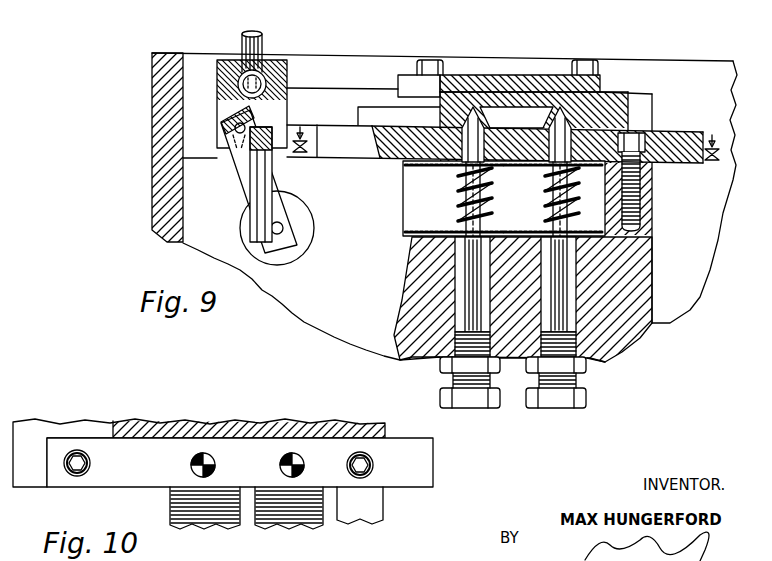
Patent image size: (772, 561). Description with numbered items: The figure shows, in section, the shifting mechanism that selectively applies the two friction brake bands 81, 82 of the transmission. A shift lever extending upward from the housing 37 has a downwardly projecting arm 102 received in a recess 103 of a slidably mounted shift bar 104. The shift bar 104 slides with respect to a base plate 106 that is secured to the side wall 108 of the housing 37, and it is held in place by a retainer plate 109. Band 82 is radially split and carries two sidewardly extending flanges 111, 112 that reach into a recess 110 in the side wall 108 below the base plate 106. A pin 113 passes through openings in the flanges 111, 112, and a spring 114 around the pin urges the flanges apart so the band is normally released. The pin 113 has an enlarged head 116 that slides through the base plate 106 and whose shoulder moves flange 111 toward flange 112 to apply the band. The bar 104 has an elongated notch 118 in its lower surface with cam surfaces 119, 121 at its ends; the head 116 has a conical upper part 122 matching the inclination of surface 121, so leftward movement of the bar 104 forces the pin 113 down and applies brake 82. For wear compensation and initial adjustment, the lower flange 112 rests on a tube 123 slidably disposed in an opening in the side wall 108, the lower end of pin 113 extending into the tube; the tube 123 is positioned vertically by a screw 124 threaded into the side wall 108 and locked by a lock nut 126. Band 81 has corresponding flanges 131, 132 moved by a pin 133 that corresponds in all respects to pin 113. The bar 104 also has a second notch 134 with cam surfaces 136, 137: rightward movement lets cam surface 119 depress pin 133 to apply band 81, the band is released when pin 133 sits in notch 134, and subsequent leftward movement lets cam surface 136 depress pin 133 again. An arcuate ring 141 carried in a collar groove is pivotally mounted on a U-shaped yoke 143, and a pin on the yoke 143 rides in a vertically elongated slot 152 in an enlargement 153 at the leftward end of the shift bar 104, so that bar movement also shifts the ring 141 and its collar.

In FIG. 9, the housing 37 is at (150, 134).
In FIG. 10, the brake band 81 is at (172, 516).
In FIG. 10, the brake band 82 is at (318, 528).
In FIG. 9, the arm 102 is at (262, 50).
In FIG. 9, the recess 103 is at (228, 70).
In FIG. 9, the shift bar 104 is at (326, 97).
In FIG. 9, the base plate 106 is at (681, 135).
In FIG. 10, the base plate 106 is at (146, 446).
In FIG. 9, the side wall 108 is at (673, 70).
In FIG. 10, the side wall 108 is at (273, 404).
In FIG. 9, the retainer plate 109 is at (483, 75).
In FIG. 9, the recess 110 is at (402, 197).
In FIG. 9, the flange 111 is at (577, 168).
In FIG. 9, the flange 112 is at (591, 233).
In FIG. 9, the pin 113 is at (547, 250).
In FIG. 9, the spring 114 is at (545, 192).
In FIG. 9, the enlarged head 116 is at (551, 146).
In FIG. 9, the elongated notch 118 is at (513, 110).
In FIG. 9, the cam surface 119 is at (470, 104).
In FIG. 9, the cam surface 121 is at (560, 104).
In FIG. 9, the conical upper part 122 is at (552, 119).
In FIG. 10, the conical upper part 122 is at (282, 462).
In FIG. 9, the tube 123 is at (573, 291).
In FIG. 9, the screw 124 is at (575, 409).
In FIG. 9, the lock nut 126 is at (578, 366).
In FIG. 9, the flange 131 is at (450, 167).
In FIG. 9, the flange 132 is at (448, 231).
In FIG. 9, the pin 133 is at (457, 202).
In FIG. 9, the second notch 134 is at (335, 153).
In FIG. 9, the cam surface 136 is at (447, 118).
In FIG. 9, the cam surface 137 is at (358, 116).
In FIG. 9, the arcuate ring 141 is at (281, 160).
In FIG. 9, the yoke 143 is at (242, 185).
In FIG. 9, the slot 152 is at (235, 163).
In FIG. 9, the enlargement 153 is at (221, 106).